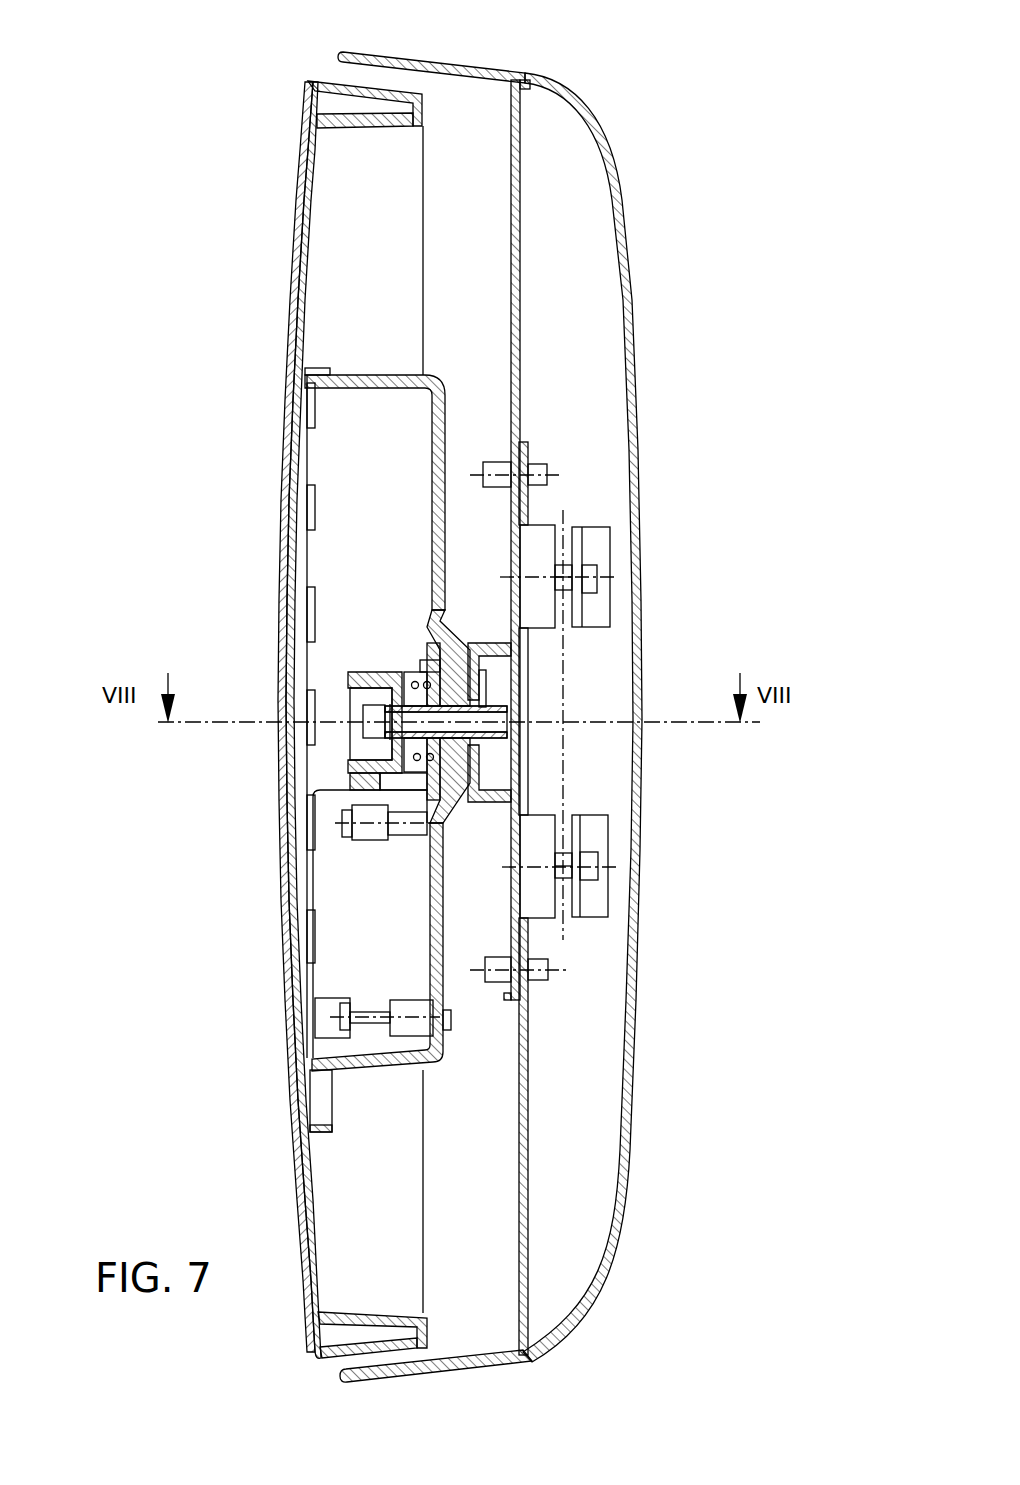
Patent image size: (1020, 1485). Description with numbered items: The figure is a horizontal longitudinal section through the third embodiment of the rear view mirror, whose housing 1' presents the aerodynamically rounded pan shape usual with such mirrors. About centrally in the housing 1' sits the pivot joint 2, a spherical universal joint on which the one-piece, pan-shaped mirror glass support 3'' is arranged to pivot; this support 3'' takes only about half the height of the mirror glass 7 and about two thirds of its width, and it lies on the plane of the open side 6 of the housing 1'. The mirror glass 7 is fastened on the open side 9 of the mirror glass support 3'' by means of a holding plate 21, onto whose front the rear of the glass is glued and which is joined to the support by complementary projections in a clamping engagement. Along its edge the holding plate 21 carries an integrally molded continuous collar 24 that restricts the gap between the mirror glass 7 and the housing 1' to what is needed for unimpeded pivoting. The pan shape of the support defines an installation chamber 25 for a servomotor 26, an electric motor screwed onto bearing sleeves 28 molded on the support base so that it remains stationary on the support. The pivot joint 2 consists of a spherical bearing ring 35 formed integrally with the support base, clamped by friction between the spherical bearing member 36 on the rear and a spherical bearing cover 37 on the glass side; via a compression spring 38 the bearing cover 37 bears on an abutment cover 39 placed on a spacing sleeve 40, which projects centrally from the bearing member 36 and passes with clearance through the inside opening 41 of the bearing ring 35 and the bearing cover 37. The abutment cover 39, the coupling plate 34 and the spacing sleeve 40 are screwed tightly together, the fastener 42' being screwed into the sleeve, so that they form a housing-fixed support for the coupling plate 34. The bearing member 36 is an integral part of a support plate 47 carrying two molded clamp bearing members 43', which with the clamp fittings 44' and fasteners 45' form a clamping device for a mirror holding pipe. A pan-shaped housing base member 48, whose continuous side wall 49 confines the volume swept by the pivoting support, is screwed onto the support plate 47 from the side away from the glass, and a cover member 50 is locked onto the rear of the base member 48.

The housing 1' is at (524, 695).
The pivot joint 2 is at (460, 715).
The mirror glass support 3'' is at (472, 1045).
The open side 6 is at (334, 71).
The mirror glass 7 is at (288, 881).
The open side 9 is at (300, 616).
The holding plate 21 is at (303, 254).
The collar 24 is at (397, 133).
The installation chamber 25 is at (352, 548).
The servomotor 26 is at (352, 911).
The bearing sleeve 28 is at (422, 826).
The coupling plate 34 is at (392, 672).
The bearing ring 35 is at (458, 785).
The bearing member 36 is at (475, 775).
The bearing cover 37 is at (458, 680).
The compression spring 38 is at (415, 770).
The abutment cover 39 is at (407, 668).
The spacing sleeve 40 is at (507, 708).
The inside opening 41 is at (486, 683).
The fastener 42' is at (351, 703).
The clamp bearing member 43' is at (559, 726).
The clamp fitting 44' is at (606, 699).
The fastener 45' is at (607, 768).
The support plate 47 is at (515, 542).
The housing base member 48 is at (520, 303).
The side wall 49 is at (458, 70).
The cover member 50 is at (637, 303).